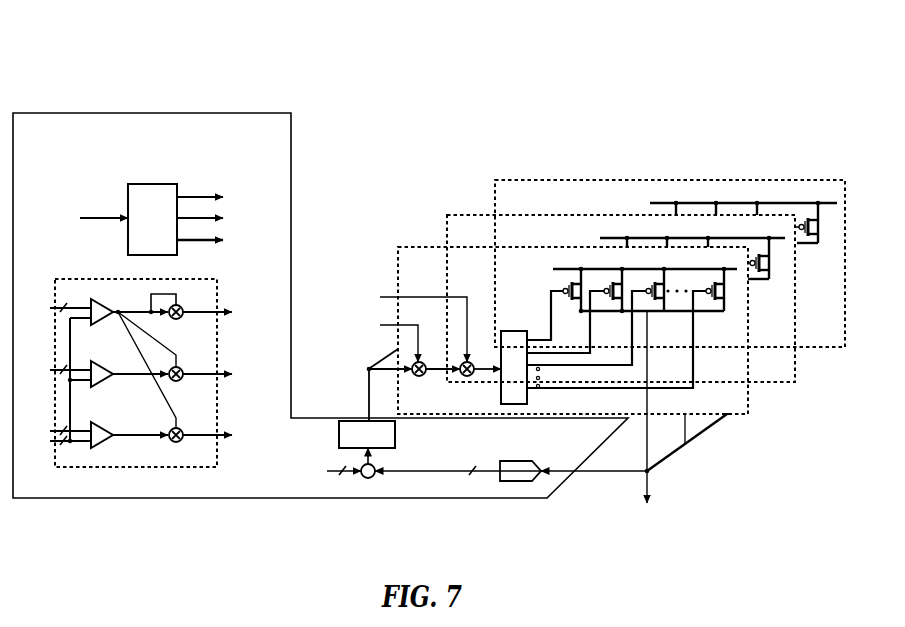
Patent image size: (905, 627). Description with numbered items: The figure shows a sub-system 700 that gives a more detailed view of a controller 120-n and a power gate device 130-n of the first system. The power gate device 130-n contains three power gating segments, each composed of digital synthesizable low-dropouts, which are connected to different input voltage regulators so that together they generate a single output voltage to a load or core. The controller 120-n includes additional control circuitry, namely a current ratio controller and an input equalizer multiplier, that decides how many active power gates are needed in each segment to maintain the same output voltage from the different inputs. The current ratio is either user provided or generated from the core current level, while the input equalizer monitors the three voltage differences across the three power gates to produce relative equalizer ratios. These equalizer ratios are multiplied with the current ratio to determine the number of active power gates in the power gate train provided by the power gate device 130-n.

The sub-system 700 is at (502, 54).
The controller 120-n is at (230, 106).
The power gate device 130-n is at (760, 164).